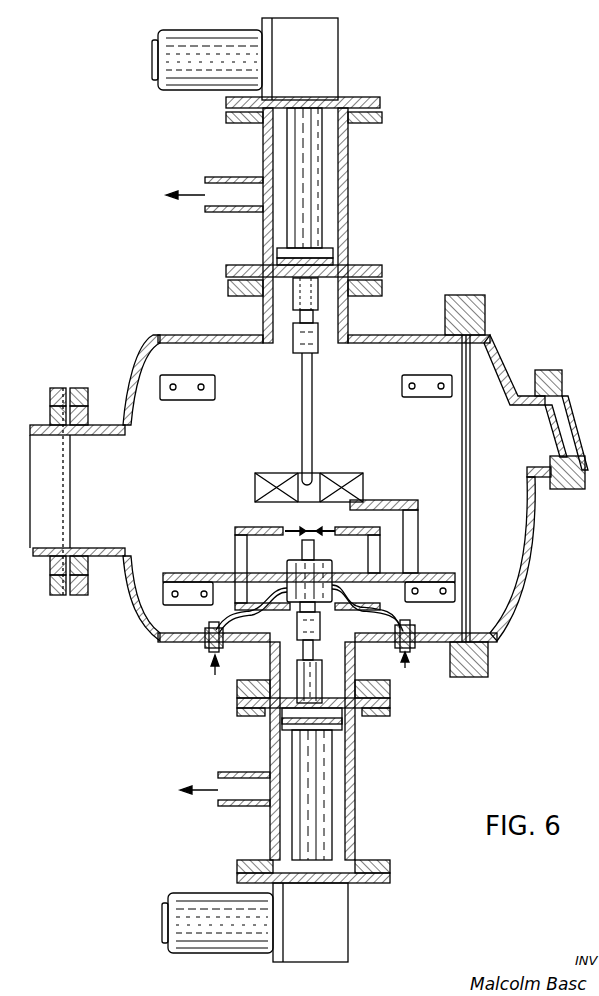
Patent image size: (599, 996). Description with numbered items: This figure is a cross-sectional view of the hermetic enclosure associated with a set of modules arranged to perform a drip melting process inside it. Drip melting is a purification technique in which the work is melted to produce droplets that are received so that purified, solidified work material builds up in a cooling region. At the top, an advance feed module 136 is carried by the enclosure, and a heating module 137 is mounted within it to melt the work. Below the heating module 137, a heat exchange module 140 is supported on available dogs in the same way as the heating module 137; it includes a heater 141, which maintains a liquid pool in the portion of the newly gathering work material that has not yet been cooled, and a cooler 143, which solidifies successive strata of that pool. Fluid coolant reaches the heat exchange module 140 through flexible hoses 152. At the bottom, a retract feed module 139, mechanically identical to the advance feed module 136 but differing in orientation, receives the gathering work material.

The advance feed module 136 is at (350, 185).
The heating module 137 is at (343, 470).
The retract feed module 139 is at (355, 791).
The heat exchange module 140 is at (233, 570).
The heater 141 is at (290, 530).
The cooler 143 is at (294, 560).
The flexible hoses 152 is at (245, 650).